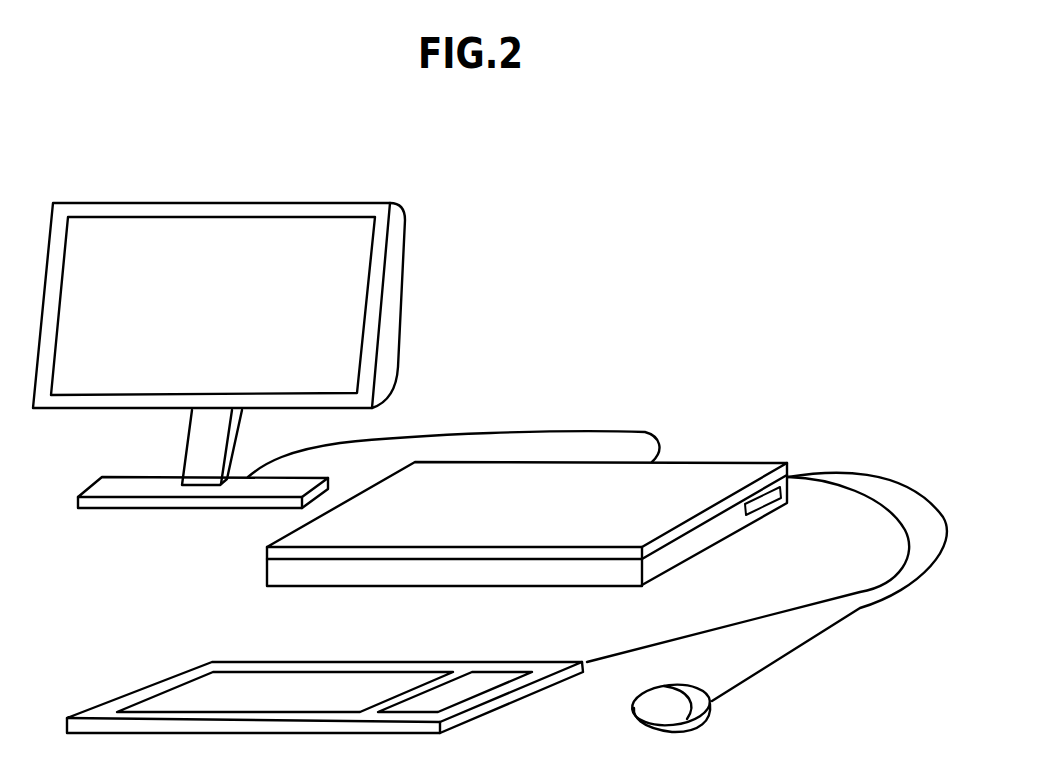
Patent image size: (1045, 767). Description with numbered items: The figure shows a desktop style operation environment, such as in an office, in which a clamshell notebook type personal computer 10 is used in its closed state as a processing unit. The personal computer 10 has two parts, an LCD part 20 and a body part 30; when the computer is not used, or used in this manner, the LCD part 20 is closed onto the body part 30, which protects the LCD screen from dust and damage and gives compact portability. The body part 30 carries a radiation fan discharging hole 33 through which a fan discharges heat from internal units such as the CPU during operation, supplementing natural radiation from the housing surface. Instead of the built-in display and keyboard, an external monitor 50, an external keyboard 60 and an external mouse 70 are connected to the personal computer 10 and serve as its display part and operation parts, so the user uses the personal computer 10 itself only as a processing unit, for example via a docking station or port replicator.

The personal computer 10 is at (582, 495).
The LCD part 20 is at (692, 482).
The body part 30 is at (515, 578).
The radiation fan discharging hole 33 is at (760, 502).
The external monitor 50 is at (452, 197).
The external keyboard 60 is at (133, 664).
The external mouse 70 is at (698, 712).